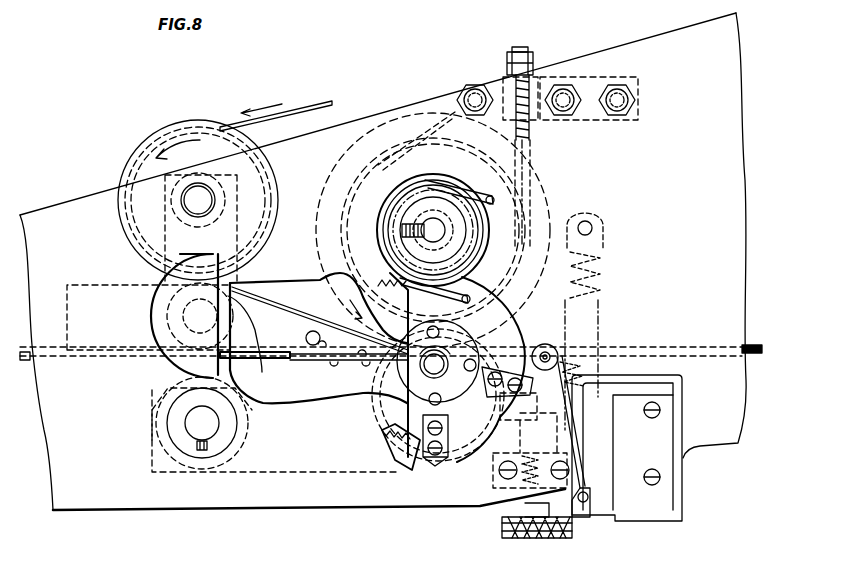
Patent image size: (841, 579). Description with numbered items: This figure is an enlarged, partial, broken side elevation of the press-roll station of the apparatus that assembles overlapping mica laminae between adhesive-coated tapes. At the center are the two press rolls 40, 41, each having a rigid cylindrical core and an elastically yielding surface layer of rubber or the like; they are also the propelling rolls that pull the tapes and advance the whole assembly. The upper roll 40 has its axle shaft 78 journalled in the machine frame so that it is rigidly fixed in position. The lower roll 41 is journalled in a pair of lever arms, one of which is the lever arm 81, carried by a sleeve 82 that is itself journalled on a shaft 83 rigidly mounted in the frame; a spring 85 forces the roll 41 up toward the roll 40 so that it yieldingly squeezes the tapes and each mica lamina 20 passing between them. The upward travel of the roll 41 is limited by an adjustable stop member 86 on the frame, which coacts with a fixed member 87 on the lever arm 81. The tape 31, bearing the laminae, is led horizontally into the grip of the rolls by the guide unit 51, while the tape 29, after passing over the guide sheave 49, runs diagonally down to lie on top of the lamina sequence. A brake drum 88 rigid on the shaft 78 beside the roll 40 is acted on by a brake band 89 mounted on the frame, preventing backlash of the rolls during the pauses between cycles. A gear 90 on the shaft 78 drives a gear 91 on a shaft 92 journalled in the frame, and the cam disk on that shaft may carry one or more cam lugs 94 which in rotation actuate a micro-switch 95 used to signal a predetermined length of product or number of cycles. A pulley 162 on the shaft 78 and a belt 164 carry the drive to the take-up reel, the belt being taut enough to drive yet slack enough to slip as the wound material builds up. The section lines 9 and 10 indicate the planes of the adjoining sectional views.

The section line 9- 9 is at (198, 118).
The section line 10- 10 is at (432, 94).
The mica lamina 20 is at (262, 350).
The tape 29 is at (294, 104).
The tape 31 is at (262, 372).
The press roll 40 is at (534, 174).
The press roll 41 is at (400, 456).
The guide sheave 49 is at (134, 170).
The guide unit 51 is at (272, 305).
The axle shaft 78 is at (410, 237).
The lever arm 81 is at (290, 474).
The sleeve 82 is at (172, 461).
The shaft 83 is at (193, 424).
The spring 85 is at (600, 263).
The adjustable stop member 86 is at (590, 391).
The fixed member 87 is at (572, 463).
The brake drum 88 is at (458, 153).
The brake band 89 is at (346, 175).
The gear 90 is at (478, 232).
The gear 91 is at (382, 437).
The shaft 92 is at (425, 372).
The cam lug 94 is at (512, 350).
The micro-switch 95 is at (672, 392).
The pulley 162 is at (445, 186).
The belt 164 is at (400, 212).